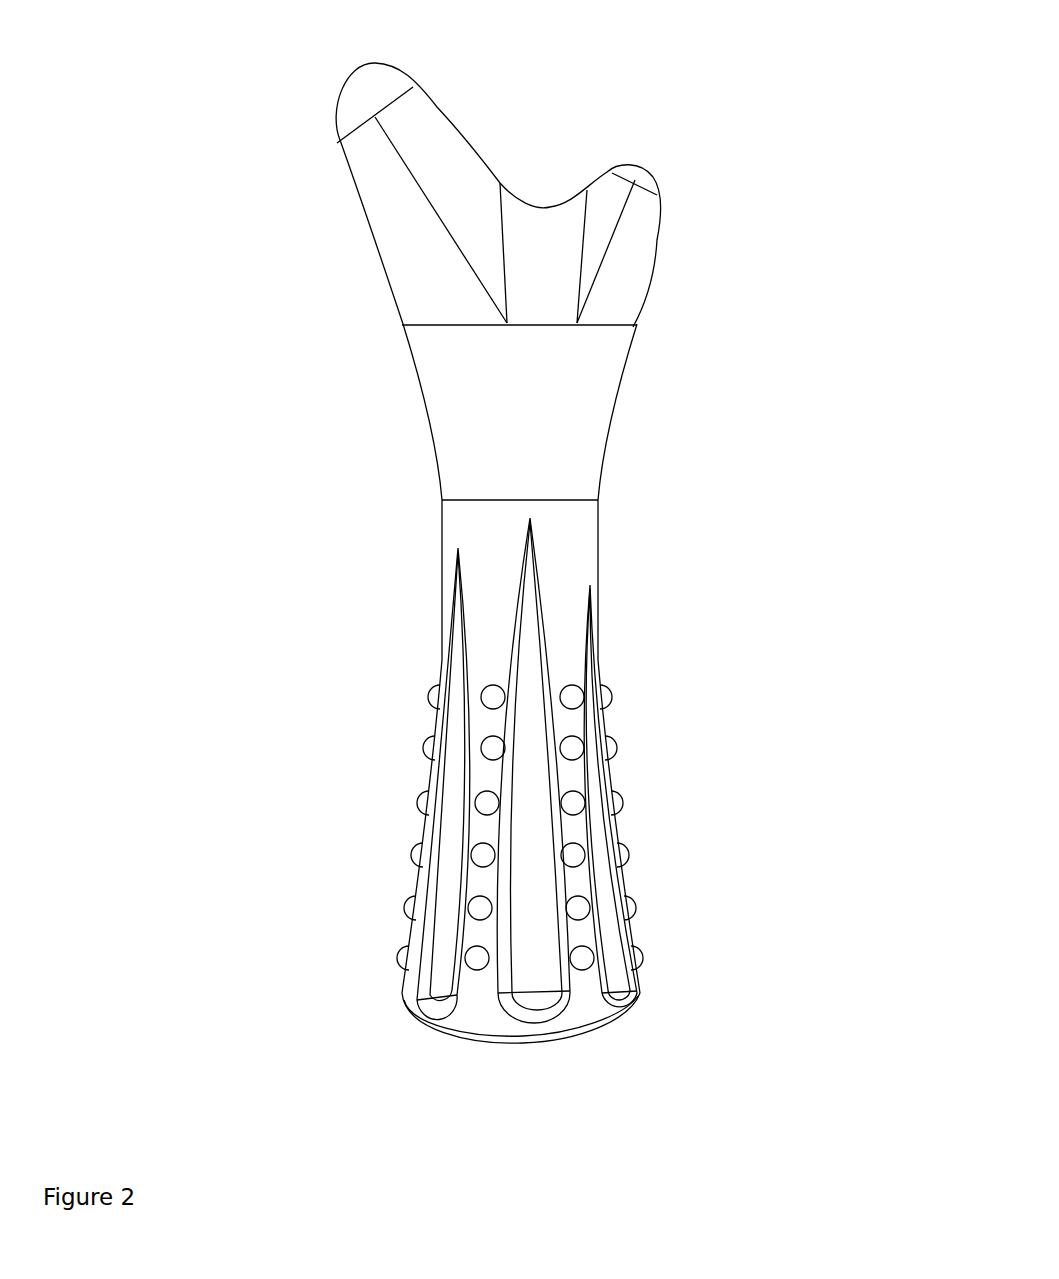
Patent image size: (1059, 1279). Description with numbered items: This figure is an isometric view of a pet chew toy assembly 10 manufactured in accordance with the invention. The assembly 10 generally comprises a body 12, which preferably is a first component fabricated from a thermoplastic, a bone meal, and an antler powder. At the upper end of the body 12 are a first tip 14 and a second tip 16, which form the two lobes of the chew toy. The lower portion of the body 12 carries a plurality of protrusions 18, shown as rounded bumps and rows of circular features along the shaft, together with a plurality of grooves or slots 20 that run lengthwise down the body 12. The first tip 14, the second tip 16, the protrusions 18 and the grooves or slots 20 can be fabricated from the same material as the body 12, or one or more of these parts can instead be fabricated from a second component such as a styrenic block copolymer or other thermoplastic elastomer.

The pet chew toy assembly 10 is at (704, 96).
The body 12 is at (542, 419).
The first tip 14 is at (635, 182).
The second tip 16 is at (368, 98).
The protrusions 18 is at (488, 748).
The grooves or slots 20 is at (525, 830).